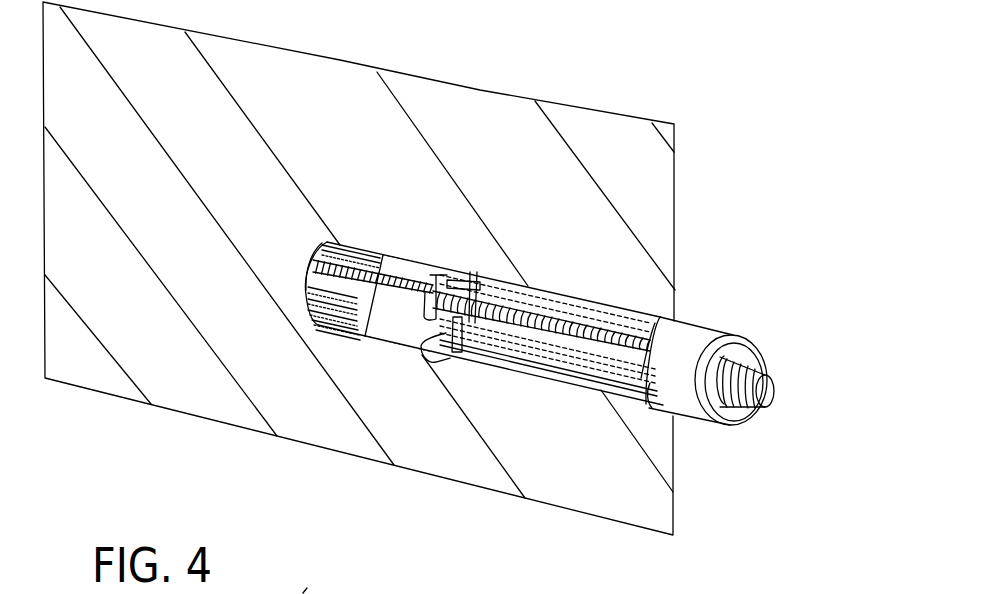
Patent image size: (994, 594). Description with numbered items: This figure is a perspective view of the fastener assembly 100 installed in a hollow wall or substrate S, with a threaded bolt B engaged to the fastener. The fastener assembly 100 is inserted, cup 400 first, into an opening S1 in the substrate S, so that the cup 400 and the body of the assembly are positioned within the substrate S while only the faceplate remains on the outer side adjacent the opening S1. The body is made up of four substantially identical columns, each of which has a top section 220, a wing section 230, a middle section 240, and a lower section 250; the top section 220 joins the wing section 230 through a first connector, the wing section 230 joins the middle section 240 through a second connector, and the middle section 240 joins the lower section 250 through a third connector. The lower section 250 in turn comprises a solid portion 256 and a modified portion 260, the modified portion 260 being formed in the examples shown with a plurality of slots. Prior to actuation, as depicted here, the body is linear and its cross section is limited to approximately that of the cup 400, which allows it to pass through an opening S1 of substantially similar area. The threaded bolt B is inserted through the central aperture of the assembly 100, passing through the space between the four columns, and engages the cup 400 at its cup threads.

The fastener assembly 100 is at (765, 211).
The top section 220 is at (700, 347).
The wing section 230 is at (543, 353).
The middle section 240 is at (470, 272).
The lower section 250 is at (370, 226).
The solid portion 256 is at (397, 313).
The modified portion 260 is at (330, 328).
The cup 400 is at (728, 418).
The substrate S is at (305, 107).
The opening S1 is at (322, 248).
The threaded bolt B is at (770, 385).